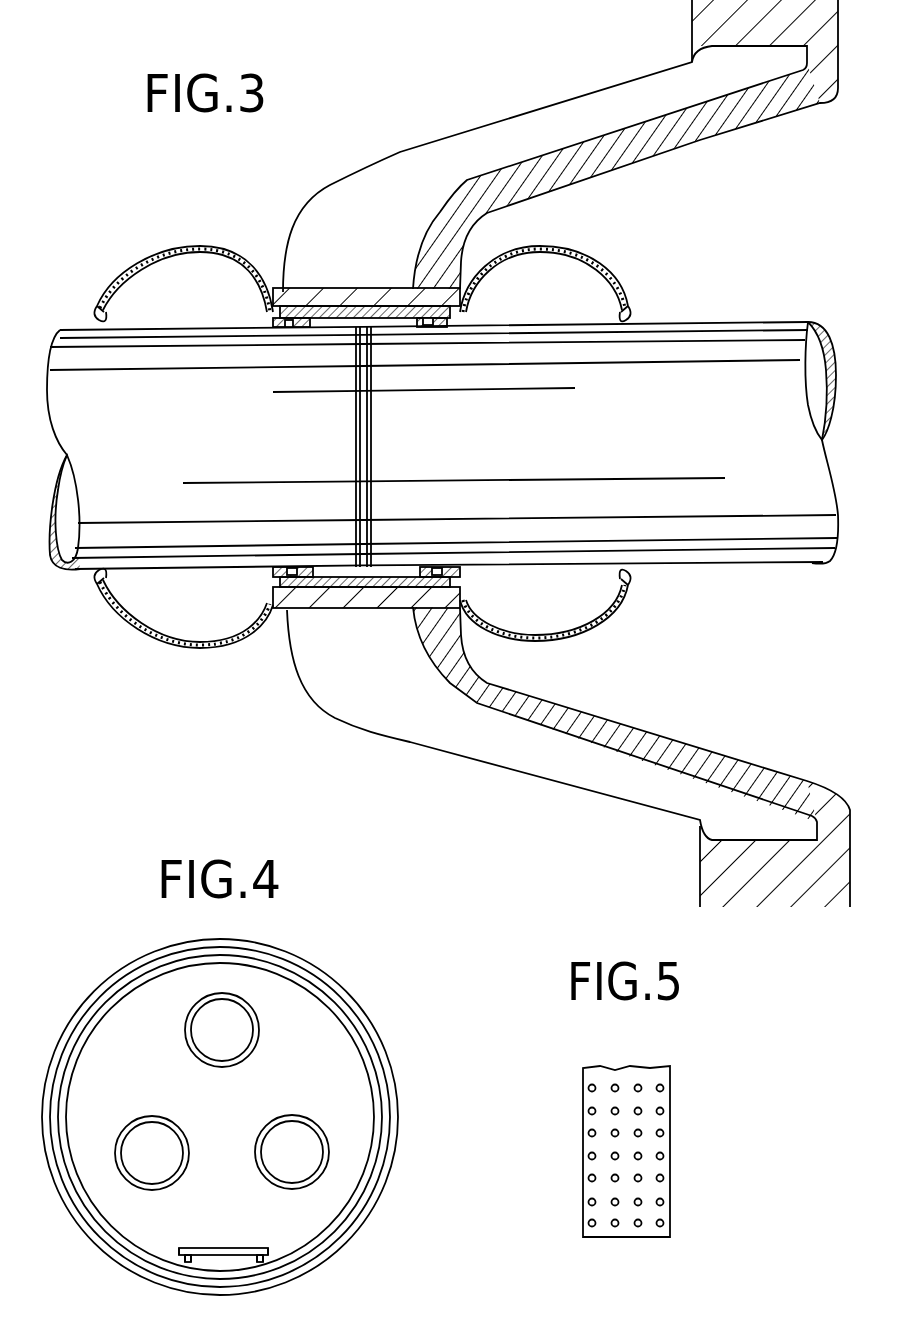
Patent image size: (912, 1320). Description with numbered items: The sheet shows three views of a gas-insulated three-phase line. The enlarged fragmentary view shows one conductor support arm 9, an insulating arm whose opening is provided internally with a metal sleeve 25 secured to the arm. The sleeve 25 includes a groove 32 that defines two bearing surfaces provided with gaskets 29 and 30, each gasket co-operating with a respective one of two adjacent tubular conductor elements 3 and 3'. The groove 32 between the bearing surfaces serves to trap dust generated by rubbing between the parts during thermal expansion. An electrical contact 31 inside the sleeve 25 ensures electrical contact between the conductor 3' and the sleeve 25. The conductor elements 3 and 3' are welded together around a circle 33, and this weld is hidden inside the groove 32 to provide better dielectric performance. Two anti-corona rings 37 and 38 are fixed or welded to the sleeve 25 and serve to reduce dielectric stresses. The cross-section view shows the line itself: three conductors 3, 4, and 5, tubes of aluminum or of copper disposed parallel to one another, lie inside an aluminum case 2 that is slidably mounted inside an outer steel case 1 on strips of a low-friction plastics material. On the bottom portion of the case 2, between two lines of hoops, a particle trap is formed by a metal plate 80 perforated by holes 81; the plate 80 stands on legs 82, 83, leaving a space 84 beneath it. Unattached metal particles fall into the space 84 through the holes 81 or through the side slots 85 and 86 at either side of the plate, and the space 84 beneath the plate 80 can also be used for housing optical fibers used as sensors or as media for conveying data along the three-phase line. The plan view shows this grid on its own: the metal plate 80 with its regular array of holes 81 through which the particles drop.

In FIG. 4, the steel case 1 is at (67, 1040).
In FIG. 4, the aluminum case 2 is at (103, 1007).
In FIG. 3, the conductor 3 is at (205, 408).
In FIG. 4, the conductor 3 is at (147, 1131).
In FIG. 3, the conductor element 3' is at (600, 403).
In FIG. 4, the conductor 4 is at (305, 1118).
In FIG. 4, the conductor 5 is at (185, 1030).
In FIG. 3, the insulating arm 9 is at (645, 132).
In FIG. 3, the metal sleeve 25 is at (368, 305).
In FIG. 3, the gasket 29 is at (287, 325).
In FIG. 3, the gasket 30 is at (450, 330).
In FIG. 3, the electrical contact 31 is at (435, 328).
In FIG. 3, the groove 32 is at (383, 573).
In FIG. 3, the circle 33 is at (372, 400).
In FIG. 3, the anti-corona ring 37 is at (148, 638).
In FIG. 3, the anti-corona ring 38 is at (626, 600).
In FIG. 4, the metal plate 80 is at (238, 1248).
In FIG. 5, the metal plate 80 is at (667, 1188).
In FIG. 5, the holes 81 is at (592, 1202).
In FIG. 4, the leg 82 is at (195, 1248).
In FIG. 4, the leg 83 is at (278, 1212).
In FIG. 4, the space 84 is at (213, 1262).
In FIG. 4, the side slot 85 is at (165, 1258).
In FIG. 4, the side slot 86 is at (283, 1258).